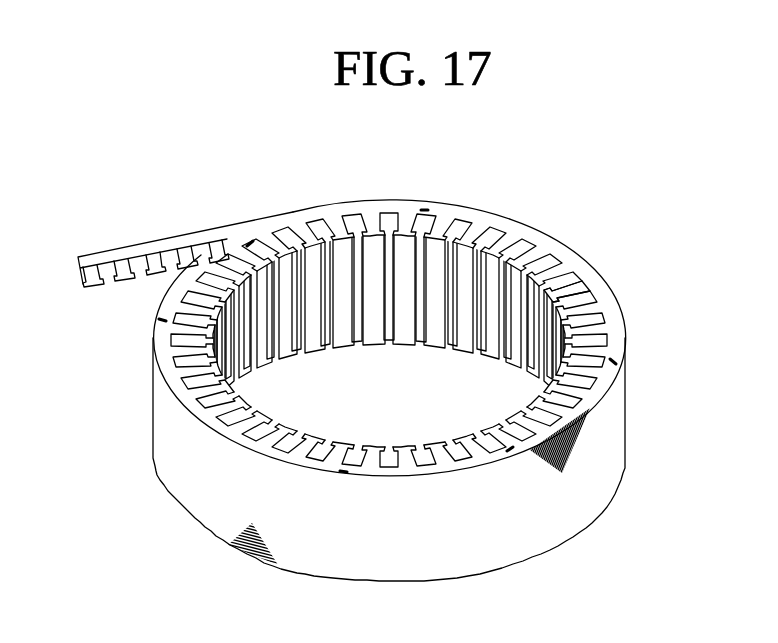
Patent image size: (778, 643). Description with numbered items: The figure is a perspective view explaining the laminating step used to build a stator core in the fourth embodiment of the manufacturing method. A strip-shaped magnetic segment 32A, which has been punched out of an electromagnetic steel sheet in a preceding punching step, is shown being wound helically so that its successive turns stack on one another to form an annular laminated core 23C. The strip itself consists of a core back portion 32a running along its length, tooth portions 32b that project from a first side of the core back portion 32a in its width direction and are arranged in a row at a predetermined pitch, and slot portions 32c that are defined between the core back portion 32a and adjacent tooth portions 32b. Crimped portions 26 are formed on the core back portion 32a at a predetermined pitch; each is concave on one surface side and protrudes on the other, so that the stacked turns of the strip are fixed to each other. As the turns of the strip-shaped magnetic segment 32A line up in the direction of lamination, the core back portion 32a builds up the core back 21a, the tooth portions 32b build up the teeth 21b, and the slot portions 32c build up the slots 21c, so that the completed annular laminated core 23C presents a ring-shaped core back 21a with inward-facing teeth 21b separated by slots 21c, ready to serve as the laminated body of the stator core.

The annular laminated core 23C is at (502, 209).
The core back 21a is at (546, 241).
The teeth 21b is at (580, 268).
The slots 21c is at (585, 293).
The crimped portions 26 is at (617, 362).
The strip-shaped magnetic segment 32A is at (146, 240).
The core back portion 32a is at (108, 257).
The tooth portions 32b is at (97, 289).
The slot portions 32c is at (113, 274).